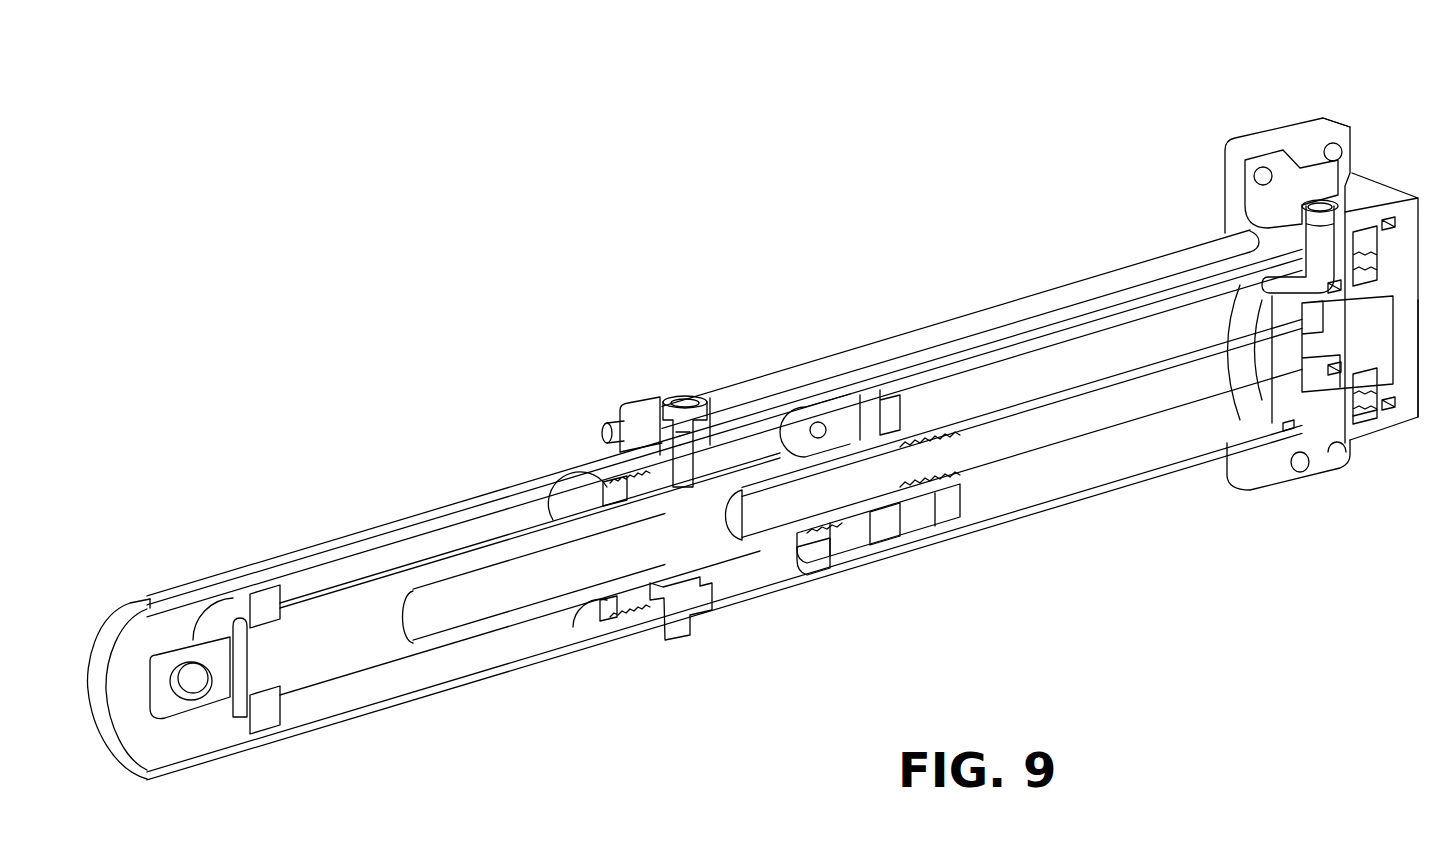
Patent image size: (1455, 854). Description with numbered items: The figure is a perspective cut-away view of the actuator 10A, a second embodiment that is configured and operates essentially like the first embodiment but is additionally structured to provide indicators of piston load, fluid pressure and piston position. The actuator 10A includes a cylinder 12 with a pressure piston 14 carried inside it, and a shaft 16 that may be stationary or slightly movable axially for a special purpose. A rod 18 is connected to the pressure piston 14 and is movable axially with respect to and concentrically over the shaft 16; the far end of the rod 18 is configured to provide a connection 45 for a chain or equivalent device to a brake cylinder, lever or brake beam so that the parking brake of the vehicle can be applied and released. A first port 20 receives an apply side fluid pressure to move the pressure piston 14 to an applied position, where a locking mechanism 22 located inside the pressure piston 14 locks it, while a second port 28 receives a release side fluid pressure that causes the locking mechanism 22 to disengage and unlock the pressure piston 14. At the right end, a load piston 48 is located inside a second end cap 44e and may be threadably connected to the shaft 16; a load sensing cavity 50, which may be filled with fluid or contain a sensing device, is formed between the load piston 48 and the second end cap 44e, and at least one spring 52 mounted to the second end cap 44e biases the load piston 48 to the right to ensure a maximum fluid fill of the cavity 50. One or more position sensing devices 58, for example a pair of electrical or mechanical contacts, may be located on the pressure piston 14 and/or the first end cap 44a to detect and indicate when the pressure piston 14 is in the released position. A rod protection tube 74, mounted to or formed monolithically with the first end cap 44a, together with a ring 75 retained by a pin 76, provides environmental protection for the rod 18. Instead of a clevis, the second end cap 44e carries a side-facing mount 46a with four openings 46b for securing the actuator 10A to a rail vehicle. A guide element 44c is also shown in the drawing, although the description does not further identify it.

The actuator 10A is at (650, 170).
The cylinder 12 is at (982, 342).
The pressure piston 14 is at (778, 428).
The shaft 16 is at (1095, 412).
The rod 18 is at (385, 643).
The first port 20 is at (665, 400).
The locking mechanism 22 is at (880, 537).
The second port 28 is at (1312, 208).
The first end cap 44a is at (620, 405).
The guide rail 44c is at (1008, 303).
The second end cap 44e is at (1233, 200).
The connection 45 is at (203, 700).
The side-facing mount 46a is at (1342, 130).
The openings 46b is at (1335, 153).
The load piston 48 is at (1393, 385).
The load sensing cavity 50 is at (1360, 416).
The spring 52 is at (1363, 243).
The position sensing devices 58 is at (737, 590).
The rod protection tube 74 is at (455, 520).
The ring 75 is at (270, 588).
The pin 76 is at (236, 621).